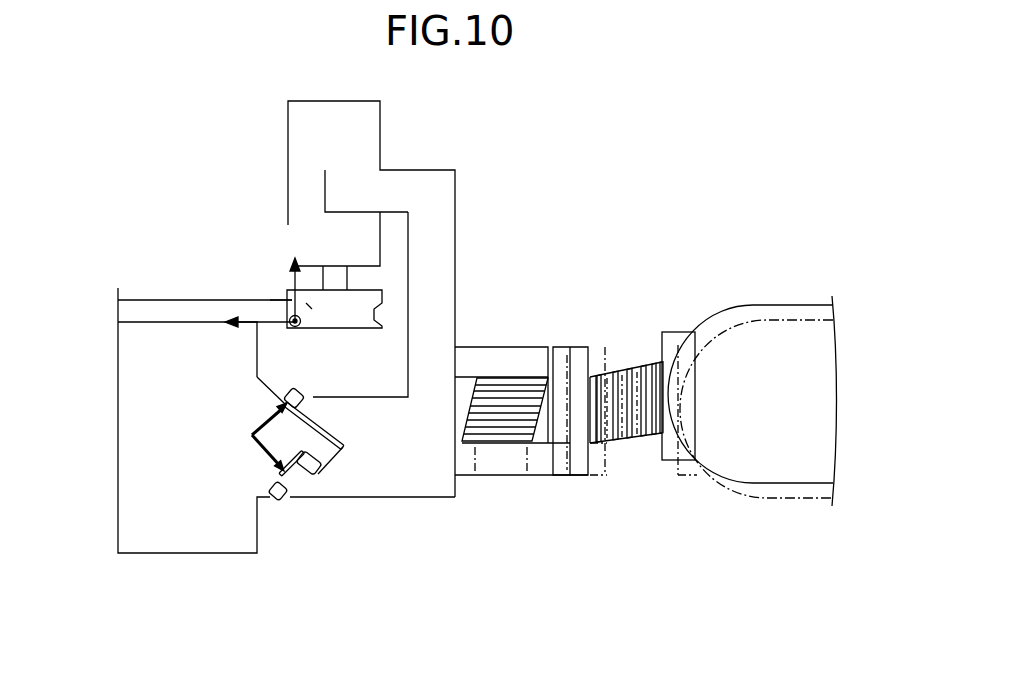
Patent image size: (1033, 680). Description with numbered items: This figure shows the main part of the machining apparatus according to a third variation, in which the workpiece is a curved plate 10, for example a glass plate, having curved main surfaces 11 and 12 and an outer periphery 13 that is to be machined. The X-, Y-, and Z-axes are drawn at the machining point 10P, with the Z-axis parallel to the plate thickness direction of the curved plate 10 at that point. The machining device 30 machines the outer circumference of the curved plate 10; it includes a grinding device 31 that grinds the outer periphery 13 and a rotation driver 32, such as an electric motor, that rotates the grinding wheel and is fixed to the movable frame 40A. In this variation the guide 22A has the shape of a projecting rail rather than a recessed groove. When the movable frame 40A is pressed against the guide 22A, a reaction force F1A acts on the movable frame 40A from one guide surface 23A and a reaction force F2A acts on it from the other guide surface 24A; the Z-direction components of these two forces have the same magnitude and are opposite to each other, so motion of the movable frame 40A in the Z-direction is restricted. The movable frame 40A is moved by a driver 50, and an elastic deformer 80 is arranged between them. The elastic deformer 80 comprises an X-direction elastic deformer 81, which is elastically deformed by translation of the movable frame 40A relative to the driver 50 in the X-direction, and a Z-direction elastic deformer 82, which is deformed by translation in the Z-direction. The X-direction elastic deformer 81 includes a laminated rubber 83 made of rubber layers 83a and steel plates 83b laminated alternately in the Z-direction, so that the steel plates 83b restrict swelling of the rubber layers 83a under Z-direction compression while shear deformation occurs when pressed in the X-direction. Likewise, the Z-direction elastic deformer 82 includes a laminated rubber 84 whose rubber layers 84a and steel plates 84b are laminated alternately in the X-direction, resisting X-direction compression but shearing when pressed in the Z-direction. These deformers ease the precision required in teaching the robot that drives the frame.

The curved plate 10 is at (256, 390).
The main surface 11 is at (131, 321).
The main surface 12 is at (148, 300).
The outer periphery 13 is at (292, 300).
The machining point 10P is at (312, 309).
The guide 22A is at (323, 501).
The guide surface 23A is at (322, 468).
The guide surface 24A is at (290, 526).
The machining device 30 is at (431, 214).
The grinding device 31 is at (370, 296).
The rotation driver 32 is at (370, 228).
The movable frame 40A is at (415, 503).
The driver 50 is at (778, 294).
The elastic deformer 80 is at (536, 412).
The X-direction elastic deformer 81 is at (503, 340).
The Z-direction elastic deformer 82 is at (623, 358).
The laminated rubber 83 is at (497, 486).
The rubber layers 83a is at (466, 446).
The steel plates 83b is at (522, 444).
The laminated rubber 84 is at (643, 352).
The rubber layers 84a is at (658, 364).
The steel plates 84b is at (650, 366).
The reaction force F1A is at (251, 433).
The reaction force F2A is at (251, 437).